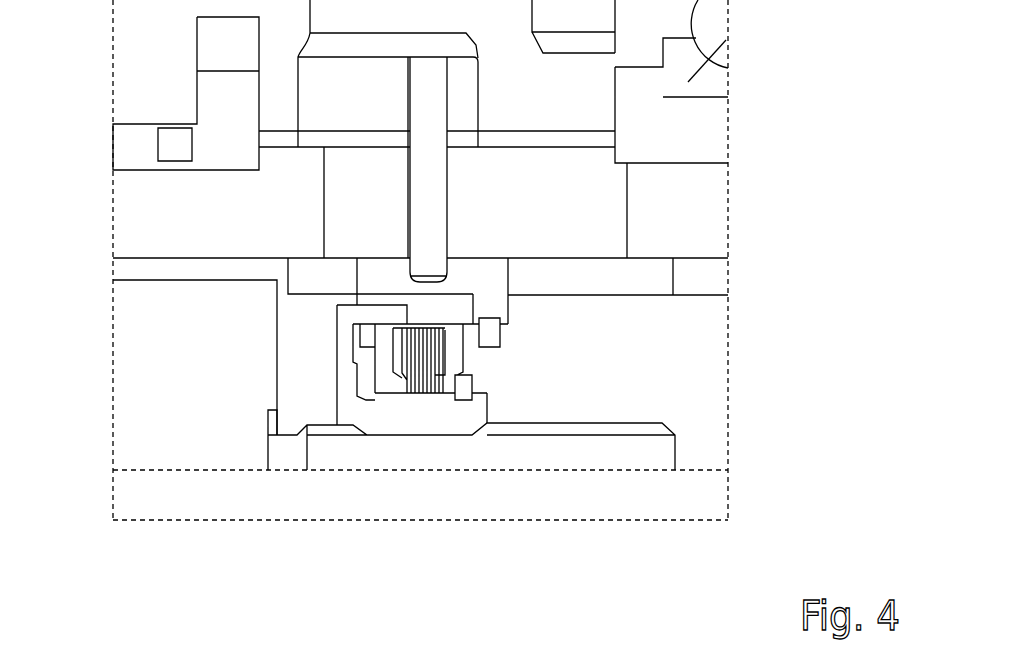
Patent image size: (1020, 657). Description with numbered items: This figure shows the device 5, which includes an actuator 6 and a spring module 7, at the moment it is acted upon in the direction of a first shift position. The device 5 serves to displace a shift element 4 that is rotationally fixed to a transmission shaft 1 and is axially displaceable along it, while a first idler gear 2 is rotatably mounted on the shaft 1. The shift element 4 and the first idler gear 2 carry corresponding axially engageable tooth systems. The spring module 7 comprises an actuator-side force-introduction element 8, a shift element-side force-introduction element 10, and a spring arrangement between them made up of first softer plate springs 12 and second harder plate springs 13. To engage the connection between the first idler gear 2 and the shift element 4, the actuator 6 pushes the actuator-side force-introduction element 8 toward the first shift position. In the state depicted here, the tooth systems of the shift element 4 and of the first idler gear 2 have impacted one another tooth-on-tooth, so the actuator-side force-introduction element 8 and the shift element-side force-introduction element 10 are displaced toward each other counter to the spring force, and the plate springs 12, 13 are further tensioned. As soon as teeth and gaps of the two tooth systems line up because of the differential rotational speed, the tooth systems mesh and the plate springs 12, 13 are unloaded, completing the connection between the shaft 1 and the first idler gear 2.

The shaft 1 is at (148, 200).
The first idler gear 2 is at (140, 88).
The shift element 4 is at (312, 74).
The device 5 is at (523, 352).
The actuator 6 is at (152, 380).
The spring module 7 is at (330, 380).
The actuator-side force-introduction element 8 is at (390, 408).
The shift element-side force-introduction element 10 is at (485, 272).
The first softer plate springs 12 is at (415, 395).
The second harder plate springs 13 is at (438, 393).